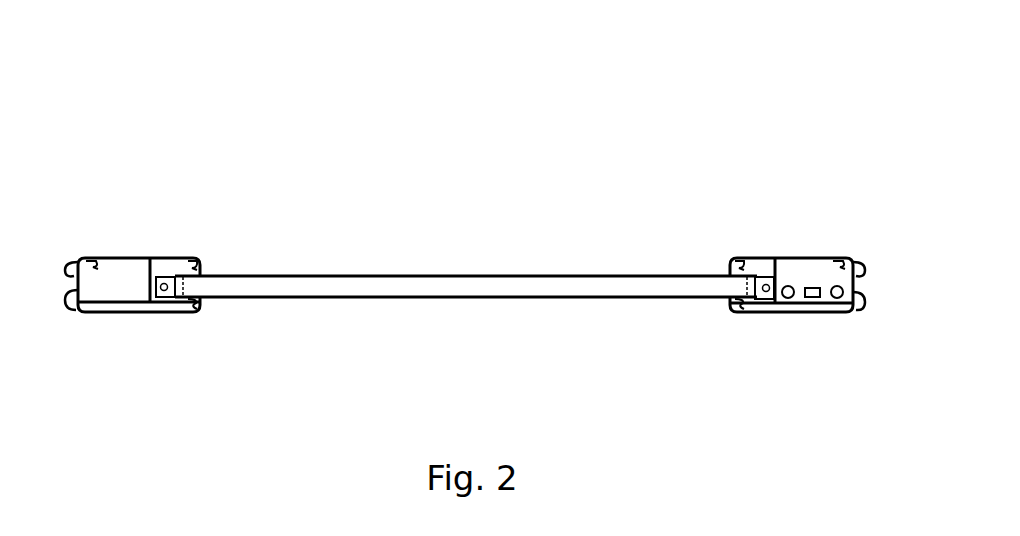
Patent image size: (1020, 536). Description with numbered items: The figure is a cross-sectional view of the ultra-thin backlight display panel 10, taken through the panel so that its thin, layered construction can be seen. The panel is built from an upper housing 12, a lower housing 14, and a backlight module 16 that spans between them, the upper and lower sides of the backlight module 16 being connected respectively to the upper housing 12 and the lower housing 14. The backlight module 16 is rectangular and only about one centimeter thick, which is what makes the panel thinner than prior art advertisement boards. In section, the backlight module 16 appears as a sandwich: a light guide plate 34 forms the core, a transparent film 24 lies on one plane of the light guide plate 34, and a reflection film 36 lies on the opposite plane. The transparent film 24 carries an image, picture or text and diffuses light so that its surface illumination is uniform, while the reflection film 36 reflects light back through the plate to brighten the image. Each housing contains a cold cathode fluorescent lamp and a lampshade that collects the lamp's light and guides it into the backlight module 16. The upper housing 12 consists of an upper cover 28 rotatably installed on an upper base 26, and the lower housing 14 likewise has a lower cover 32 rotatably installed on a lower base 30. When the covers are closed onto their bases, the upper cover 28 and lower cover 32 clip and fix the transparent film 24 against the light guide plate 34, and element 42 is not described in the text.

The ultra-thin backlight display panel 10 is at (641, 61).
The upper housing 12 is at (812, 208).
The lower housing 14 is at (115, 208).
The backlight module 16 is at (455, 228).
The transparent film 24 is at (356, 275).
The upper base 26 is at (833, 313).
The upper cover 28 is at (829, 258).
The lower base 30 is at (102, 313).
The lower cover 32 is at (100, 257).
The light guide plate 34 is at (305, 283).
The reflection film 36 is at (359, 298).
The mounting plate 42 is at (798, 303).